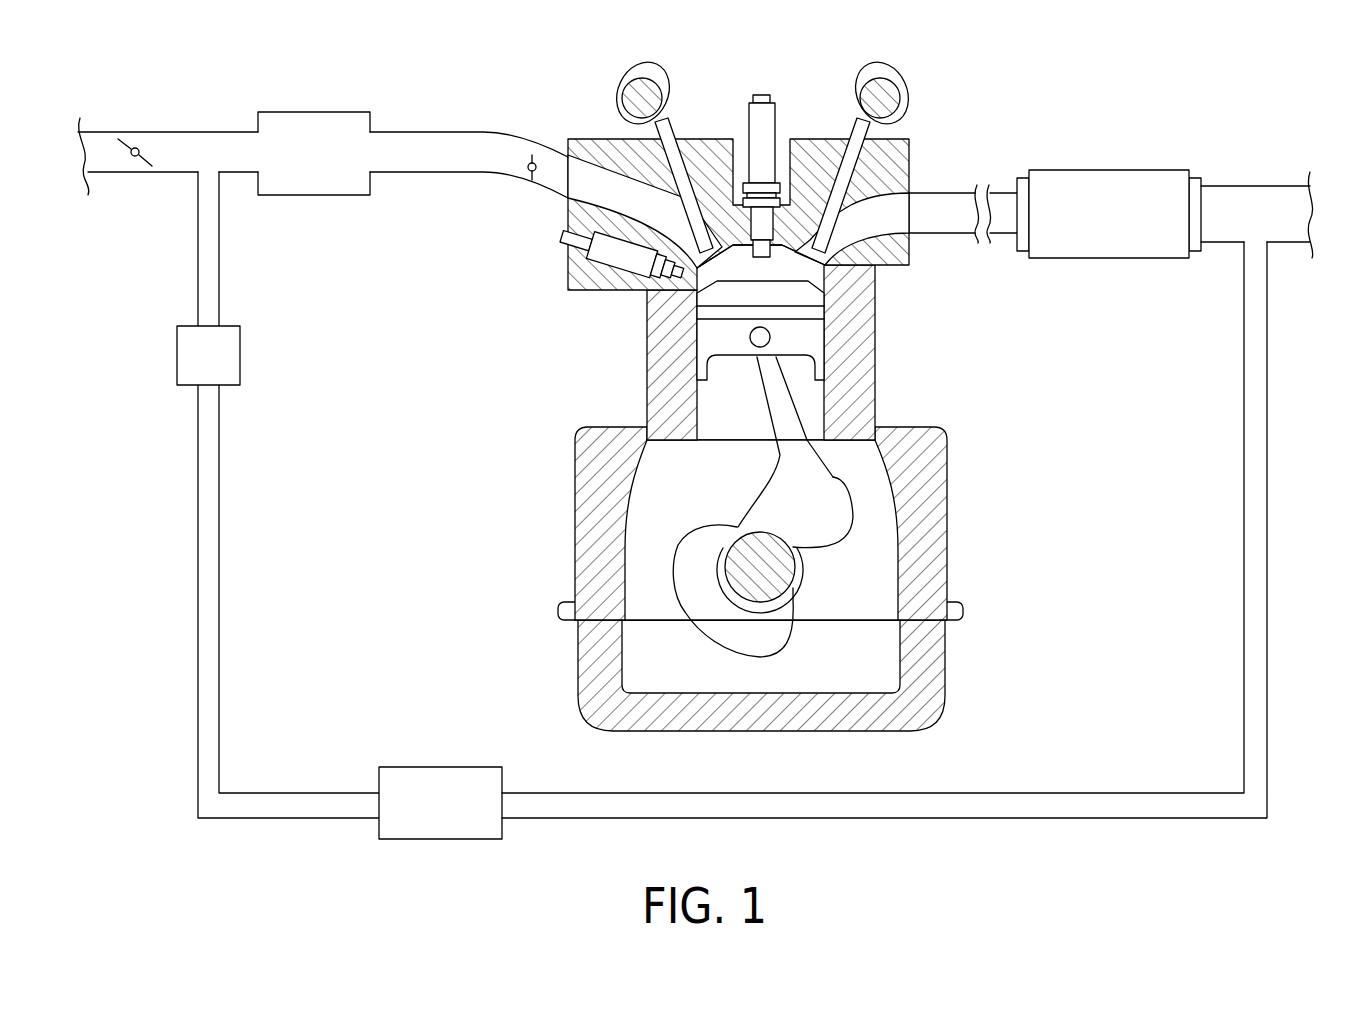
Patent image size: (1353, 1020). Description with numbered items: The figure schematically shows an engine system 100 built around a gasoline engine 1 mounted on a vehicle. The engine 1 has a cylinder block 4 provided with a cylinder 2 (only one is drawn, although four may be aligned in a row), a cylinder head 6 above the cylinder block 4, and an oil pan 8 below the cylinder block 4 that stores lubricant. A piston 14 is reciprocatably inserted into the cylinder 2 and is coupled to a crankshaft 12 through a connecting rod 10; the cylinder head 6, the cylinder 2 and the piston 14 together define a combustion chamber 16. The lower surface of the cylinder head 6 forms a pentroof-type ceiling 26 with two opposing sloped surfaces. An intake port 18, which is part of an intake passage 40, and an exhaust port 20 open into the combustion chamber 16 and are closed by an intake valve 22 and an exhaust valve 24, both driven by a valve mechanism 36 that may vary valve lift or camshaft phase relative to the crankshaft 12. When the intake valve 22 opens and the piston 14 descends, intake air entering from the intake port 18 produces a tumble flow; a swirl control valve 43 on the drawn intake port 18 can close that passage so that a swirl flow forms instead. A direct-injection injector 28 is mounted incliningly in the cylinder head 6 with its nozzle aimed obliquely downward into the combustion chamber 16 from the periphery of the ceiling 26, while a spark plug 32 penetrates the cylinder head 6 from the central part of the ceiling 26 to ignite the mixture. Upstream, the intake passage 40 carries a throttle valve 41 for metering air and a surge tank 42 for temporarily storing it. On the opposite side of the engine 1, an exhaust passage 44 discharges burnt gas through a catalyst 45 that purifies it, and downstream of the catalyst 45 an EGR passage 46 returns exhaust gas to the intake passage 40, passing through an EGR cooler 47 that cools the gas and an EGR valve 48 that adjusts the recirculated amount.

The engine system 100 is at (940, 78).
The engine 1 is at (1008, 462).
The cylinder 2 is at (878, 383).
The cylinder block 4 is at (950, 512).
The cylinder head 6 is at (912, 160).
The oil pan 8 is at (948, 650).
The connecting rod 10 is at (785, 428).
The crankshaft 12 is at (800, 542).
The piston 14 is at (826, 292).
The combustion chamber 16 is at (748, 278).
The intake port 18 is at (602, 193).
The exhaust port 20 is at (892, 225).
The intake valve 22 is at (672, 128).
The exhaust valve 24 is at (850, 130).
The ceiling 26 is at (791, 261).
The injector 28 is at (562, 238).
The spark plug 32 is at (747, 130).
The valve mechanism 36 is at (640, 68).
The intake passage 40 is at (183, 132).
The throttle valve 41 is at (128, 140).
The surge tank 42 is at (312, 196).
The swirl control valve 43 is at (522, 185).
The exhaust passage 44 is at (937, 238).
The catalyst 45 is at (1100, 170).
The EGR passage 46 is at (1268, 440).
The EGR cooler 47 is at (432, 767).
The EGR valve 48 is at (242, 362).